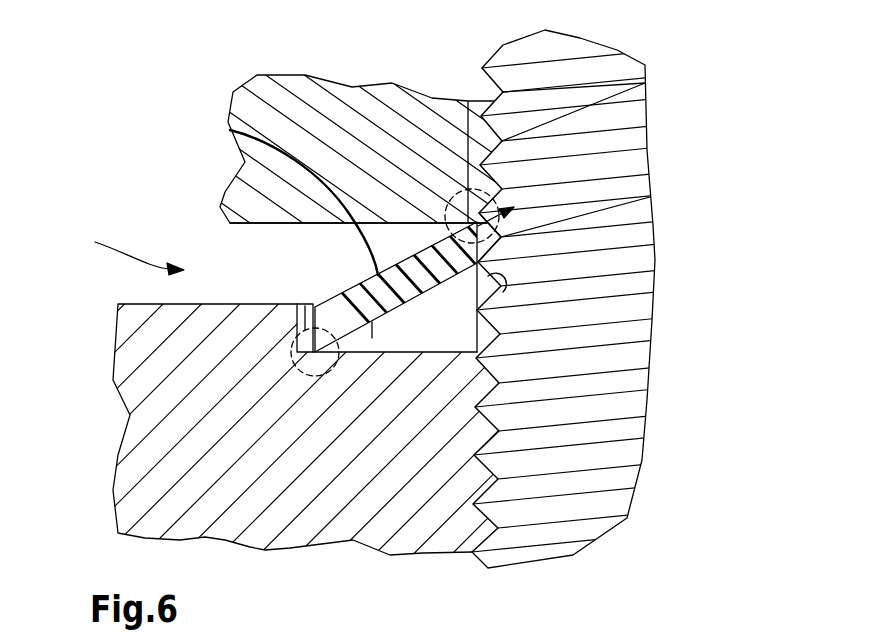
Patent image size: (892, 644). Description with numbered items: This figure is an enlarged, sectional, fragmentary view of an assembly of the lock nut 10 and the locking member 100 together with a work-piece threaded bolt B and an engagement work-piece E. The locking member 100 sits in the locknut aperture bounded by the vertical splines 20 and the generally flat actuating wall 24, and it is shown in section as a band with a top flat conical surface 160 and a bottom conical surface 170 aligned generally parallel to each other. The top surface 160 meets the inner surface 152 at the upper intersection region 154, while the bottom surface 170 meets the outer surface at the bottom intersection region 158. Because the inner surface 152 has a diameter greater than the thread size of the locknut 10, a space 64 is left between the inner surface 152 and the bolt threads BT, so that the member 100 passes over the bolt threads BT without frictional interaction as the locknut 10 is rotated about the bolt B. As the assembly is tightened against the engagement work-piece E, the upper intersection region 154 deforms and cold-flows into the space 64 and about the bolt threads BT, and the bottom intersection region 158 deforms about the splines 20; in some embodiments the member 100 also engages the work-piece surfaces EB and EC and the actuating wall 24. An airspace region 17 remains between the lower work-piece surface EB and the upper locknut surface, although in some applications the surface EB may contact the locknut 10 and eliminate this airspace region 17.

The engagement work-piece E is at (336, 113).
The lower work-piece surface EB is at (240, 223).
The work-piece surface EC is at (645, 83).
The work-piece threaded bolt B is at (627, 165).
The bolt threads BT is at (503, 286).
The locking member 100 is at (228, 128).
The top flat conical surface 160 is at (396, 250).
The upper intersection region 154 is at (512, 208).
The inner surface 152 is at (505, 235).
The lock nut 10 is at (178, 438).
The vertical splines 20 is at (304, 303).
The space 64 is at (495, 258).
The bottom intersection region 158 is at (306, 362).
The bottom conical surface 170 is at (372, 338).
The actuating wall 24 is at (415, 372).
The airspace region 17 is at (124, 252).